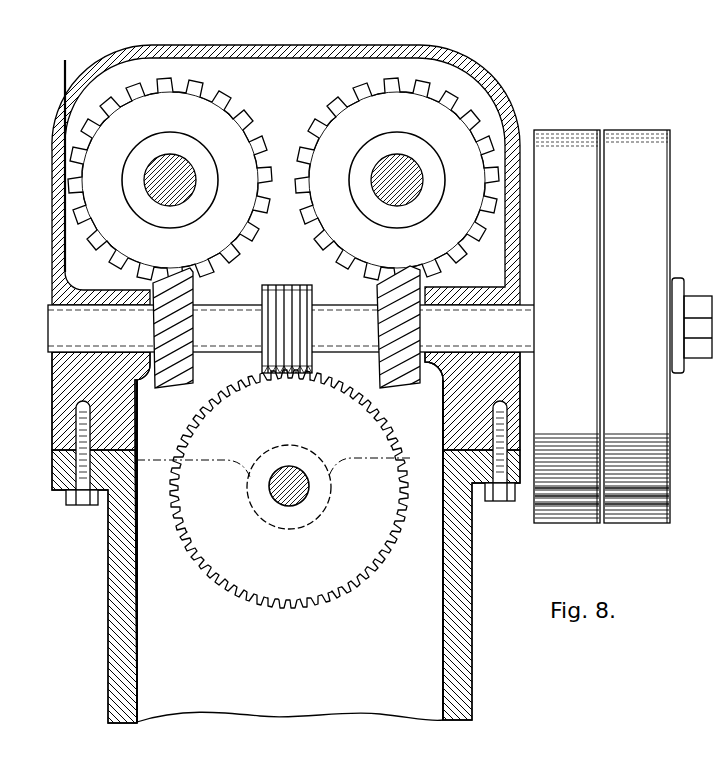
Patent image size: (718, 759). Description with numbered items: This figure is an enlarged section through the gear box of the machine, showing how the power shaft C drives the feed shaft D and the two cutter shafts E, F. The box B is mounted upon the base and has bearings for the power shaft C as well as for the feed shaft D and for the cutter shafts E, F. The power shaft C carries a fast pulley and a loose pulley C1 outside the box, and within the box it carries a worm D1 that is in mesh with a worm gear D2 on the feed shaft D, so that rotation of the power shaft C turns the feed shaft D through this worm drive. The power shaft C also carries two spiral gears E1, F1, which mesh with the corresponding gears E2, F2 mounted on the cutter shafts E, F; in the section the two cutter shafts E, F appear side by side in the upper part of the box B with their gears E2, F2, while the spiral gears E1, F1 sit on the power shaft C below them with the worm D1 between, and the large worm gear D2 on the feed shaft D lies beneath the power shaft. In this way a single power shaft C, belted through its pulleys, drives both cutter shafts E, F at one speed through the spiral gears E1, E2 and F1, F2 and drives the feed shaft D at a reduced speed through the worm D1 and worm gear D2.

The box B is at (286, 364).
The cutter shaft E is at (170, 180).
The spiral gear E1 is at (175, 343).
The gear E2 is at (170, 166).
The cutter shaft F is at (397, 180).
The spiral gear F1 is at (400, 340).
The gear F2 is at (397, 164).
The feed shaft D is at (273, 489).
The worm D1 is at (287, 314).
The worm gear D2 is at (289, 461).
The power shaft C is at (567, 326).
The loose pulley C1 is at (658, 326).